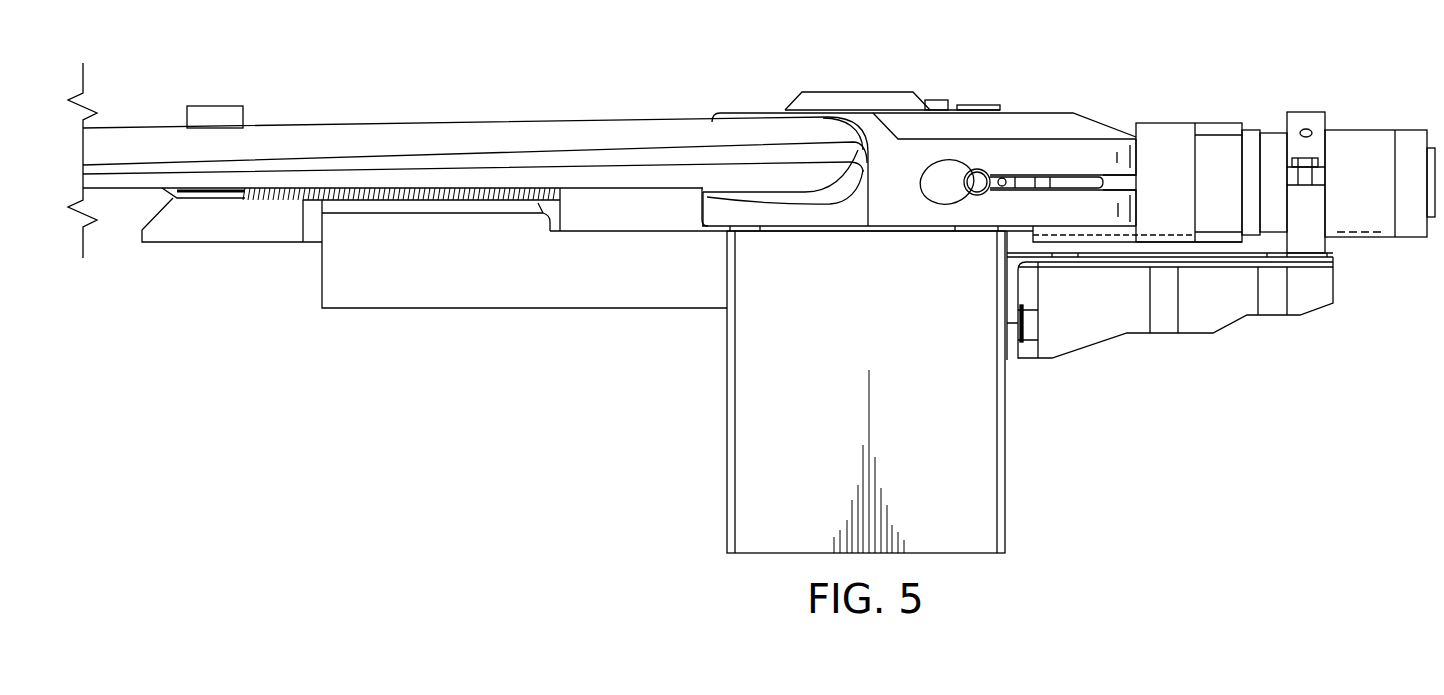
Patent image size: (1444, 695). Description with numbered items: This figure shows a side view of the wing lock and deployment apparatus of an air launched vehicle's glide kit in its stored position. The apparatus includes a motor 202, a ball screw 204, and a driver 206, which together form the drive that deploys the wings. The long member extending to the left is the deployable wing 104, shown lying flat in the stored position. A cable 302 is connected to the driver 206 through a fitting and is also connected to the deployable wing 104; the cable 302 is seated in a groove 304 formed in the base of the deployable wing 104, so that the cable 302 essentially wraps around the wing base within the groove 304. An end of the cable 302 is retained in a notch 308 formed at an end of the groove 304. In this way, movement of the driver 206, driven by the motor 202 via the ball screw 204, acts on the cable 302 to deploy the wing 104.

The deployable wing 104 is at (658, 122).
The motor 202 is at (1183, 123).
The ball screw 204 is at (405, 198).
The driver 206 is at (607, 218).
The cable 302 is at (1060, 182).
The groove 304 is at (1132, 183).
The notch 308 is at (937, 187).